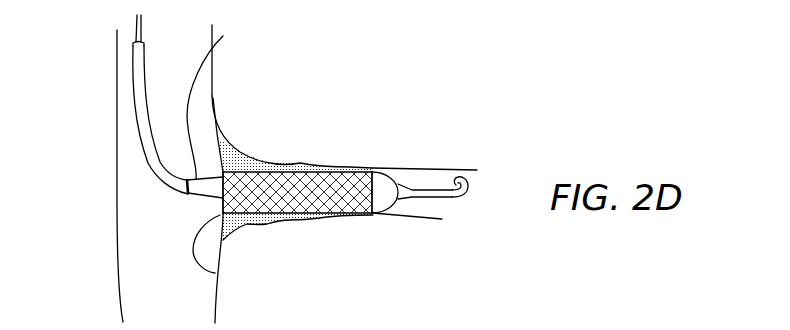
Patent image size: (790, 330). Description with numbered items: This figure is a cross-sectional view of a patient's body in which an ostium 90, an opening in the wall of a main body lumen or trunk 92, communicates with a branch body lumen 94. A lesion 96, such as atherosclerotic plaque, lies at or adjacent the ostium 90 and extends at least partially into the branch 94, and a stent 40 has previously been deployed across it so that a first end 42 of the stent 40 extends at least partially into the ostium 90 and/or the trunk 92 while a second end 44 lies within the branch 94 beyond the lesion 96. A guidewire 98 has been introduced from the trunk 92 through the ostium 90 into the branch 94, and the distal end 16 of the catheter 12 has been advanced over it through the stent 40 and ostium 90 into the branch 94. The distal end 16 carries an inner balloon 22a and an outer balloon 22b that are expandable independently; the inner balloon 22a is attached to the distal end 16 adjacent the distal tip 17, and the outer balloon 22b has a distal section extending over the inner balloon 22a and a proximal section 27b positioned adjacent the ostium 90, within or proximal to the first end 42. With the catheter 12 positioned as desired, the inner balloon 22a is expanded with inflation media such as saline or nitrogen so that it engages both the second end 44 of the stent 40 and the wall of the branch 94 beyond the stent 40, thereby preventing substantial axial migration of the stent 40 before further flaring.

The catheter 12 is at (118, 104).
The main body lumen or trunk 92 is at (92, 176).
The distal end of the catheter 16 is at (142, 197).
The outer balloon 22b is at (144, 224).
The proximal section of the outer balloon 27b is at (242, 59).
The first end of the stent 42 is at (279, 107).
The lesion 96 is at (292, 128).
The second end of the stent 44 is at (372, 160).
The branch body lumen 94 is at (424, 153).
The guidewire 98 is at (487, 216).
The distal tip 17 is at (417, 223).
The inner balloon 22a is at (392, 235).
The stent 40 is at (298, 224).
The ostium 90 is at (229, 268).